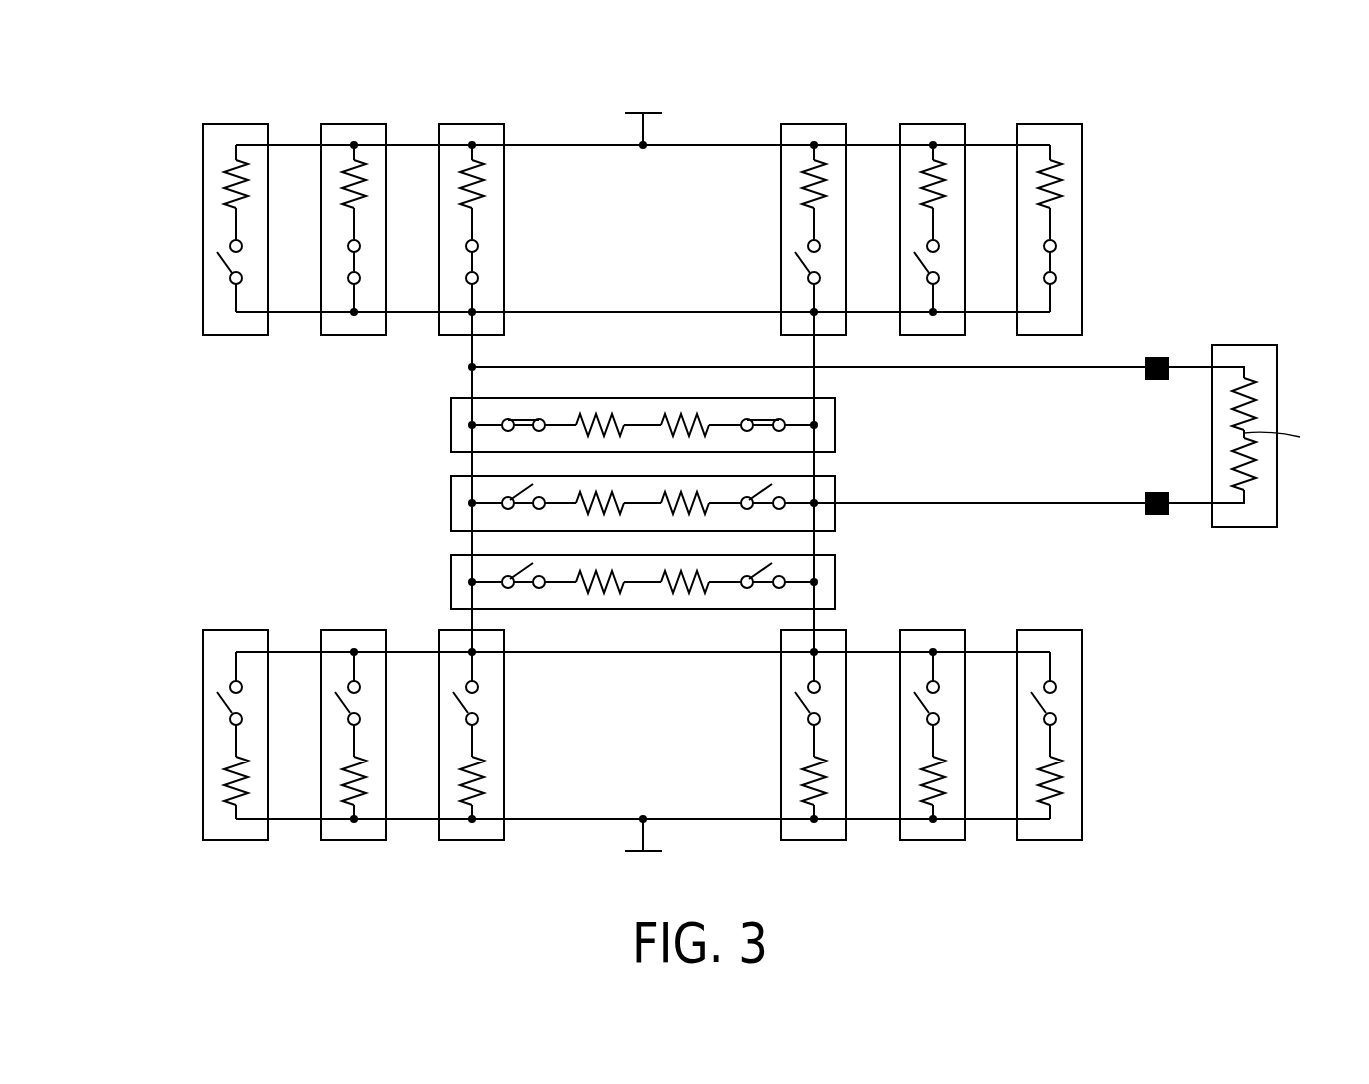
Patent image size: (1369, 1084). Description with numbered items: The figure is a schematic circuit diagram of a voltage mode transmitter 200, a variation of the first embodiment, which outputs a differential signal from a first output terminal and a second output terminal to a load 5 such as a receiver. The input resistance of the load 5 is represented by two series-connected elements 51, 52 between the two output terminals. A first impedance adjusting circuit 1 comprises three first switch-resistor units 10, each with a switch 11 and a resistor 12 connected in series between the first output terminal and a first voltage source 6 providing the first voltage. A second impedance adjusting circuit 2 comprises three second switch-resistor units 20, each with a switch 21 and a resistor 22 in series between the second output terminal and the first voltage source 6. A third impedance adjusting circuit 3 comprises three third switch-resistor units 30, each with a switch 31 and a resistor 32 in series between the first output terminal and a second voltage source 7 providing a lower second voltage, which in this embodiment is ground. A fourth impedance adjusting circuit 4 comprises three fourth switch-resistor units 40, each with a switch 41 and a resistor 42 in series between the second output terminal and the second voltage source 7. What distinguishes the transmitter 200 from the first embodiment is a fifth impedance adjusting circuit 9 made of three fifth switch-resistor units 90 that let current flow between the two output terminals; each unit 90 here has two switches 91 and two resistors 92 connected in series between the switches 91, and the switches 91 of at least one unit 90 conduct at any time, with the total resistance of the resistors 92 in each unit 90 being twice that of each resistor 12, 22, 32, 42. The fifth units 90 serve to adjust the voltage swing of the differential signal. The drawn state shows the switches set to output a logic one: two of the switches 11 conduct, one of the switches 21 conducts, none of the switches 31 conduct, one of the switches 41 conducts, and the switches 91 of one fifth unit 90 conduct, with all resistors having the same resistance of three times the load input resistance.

The voltage mode transmitter 200 is at (136, 77).
The first impedance adjusting circuit 1 is at (228, 363).
The first switch-resistor unit 10 is at (235, 124).
The switch 11 is at (223, 263).
The resistor 12 is at (225, 178).
The second impedance adjusting circuit 2 is at (1111, 103).
The second switch-resistor unit 20 is at (815, 124).
The switch 21 is at (1055, 263).
The resistor 22 is at (1058, 187).
The third impedance adjusting circuit 3 is at (178, 632).
The third switch-resistor unit 30 is at (233, 841).
The switch 31 is at (223, 712).
The resistor 32 is at (225, 790).
The fourth impedance adjusting circuit 4 is at (1110, 632).
The fourth switch-resistor unit 40 is at (815, 841).
The switch 41 is at (1055, 712).
The resistor 42 is at (1058, 790).
The load 5 is at (1277, 360).
The input resistance element 51 is at (1250, 410).
The input resistance element 52 is at (1250, 470).
The first voltage source 6 is at (628, 112).
The second voltage source 7 is at (628, 852).
The fifth impedance adjusting circuit 9 is at (374, 459).
The fifth switch-resistor unit 90 is at (451, 425).
The switch 91 is at (522, 418).
The resistor 92 is at (603, 414).